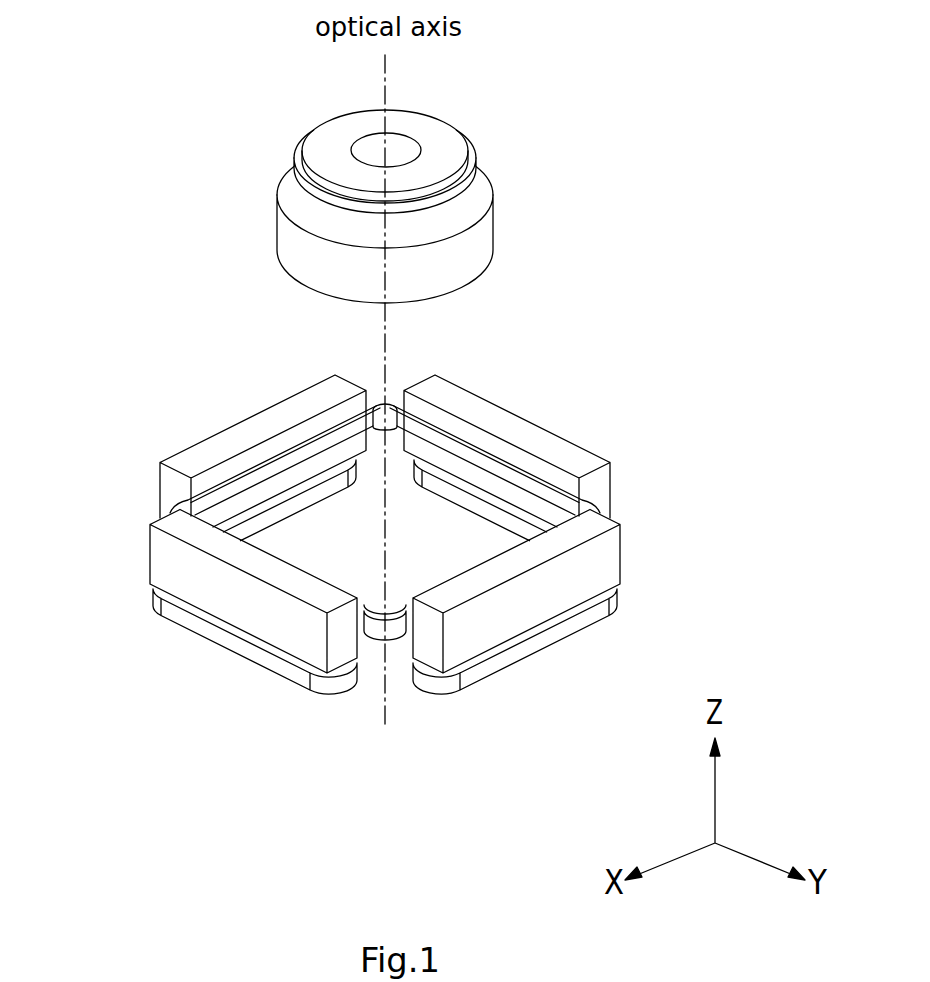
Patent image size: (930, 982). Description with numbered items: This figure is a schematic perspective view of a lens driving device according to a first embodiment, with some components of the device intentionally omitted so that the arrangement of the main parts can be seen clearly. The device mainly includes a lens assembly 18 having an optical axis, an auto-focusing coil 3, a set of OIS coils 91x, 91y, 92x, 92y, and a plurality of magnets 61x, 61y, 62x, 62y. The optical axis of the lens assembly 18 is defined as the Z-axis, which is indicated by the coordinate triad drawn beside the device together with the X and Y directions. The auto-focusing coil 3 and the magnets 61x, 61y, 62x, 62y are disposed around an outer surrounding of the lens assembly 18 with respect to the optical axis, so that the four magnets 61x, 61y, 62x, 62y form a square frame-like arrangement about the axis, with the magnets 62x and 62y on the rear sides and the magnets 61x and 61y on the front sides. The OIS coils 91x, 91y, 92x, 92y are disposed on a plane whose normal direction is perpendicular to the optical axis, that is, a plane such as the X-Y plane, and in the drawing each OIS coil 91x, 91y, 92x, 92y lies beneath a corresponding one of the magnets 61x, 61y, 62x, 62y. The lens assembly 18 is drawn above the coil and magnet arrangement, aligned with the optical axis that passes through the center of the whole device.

The lens assembly 18 is at (487, 237).
The auto-focusing coil 3 is at (378, 403).
The magnet 62x is at (247, 430).
The magnet 62y is at (522, 430).
The magnet 61x is at (603, 567).
The magnet 61y is at (166, 566).
The OIS coil 92x is at (303, 505).
The OIS coil 92y is at (497, 516).
The OIS coil 91x is at (538, 648).
The OIS coil 91y is at (232, 648).